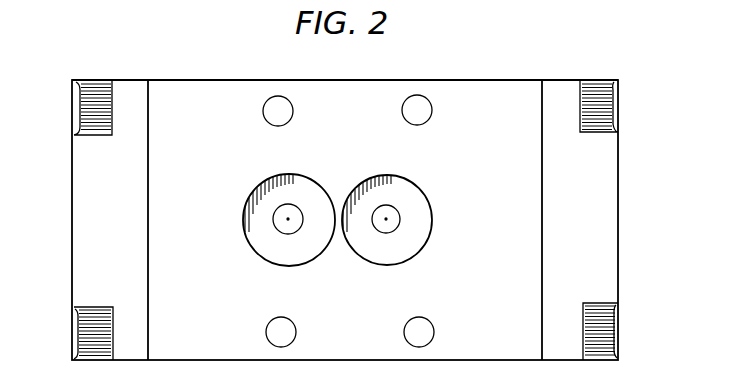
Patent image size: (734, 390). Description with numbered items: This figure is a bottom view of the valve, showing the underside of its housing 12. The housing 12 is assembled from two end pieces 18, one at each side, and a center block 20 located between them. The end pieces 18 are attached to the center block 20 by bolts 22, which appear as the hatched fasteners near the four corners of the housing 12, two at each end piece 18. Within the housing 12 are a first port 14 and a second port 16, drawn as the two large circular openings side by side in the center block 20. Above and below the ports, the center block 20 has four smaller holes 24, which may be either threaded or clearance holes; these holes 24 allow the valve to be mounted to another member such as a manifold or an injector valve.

The housing 12 is at (485, 190).
The first port 14 is at (244, 217).
The second port 16 is at (424, 232).
The end pieces 18 is at (72, 234).
The center block 20 is at (229, 80).
The bolts 22 is at (80, 126).
The holes 24 is at (420, 103).